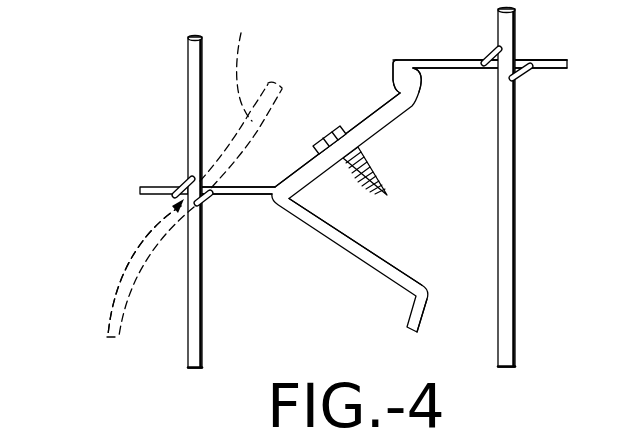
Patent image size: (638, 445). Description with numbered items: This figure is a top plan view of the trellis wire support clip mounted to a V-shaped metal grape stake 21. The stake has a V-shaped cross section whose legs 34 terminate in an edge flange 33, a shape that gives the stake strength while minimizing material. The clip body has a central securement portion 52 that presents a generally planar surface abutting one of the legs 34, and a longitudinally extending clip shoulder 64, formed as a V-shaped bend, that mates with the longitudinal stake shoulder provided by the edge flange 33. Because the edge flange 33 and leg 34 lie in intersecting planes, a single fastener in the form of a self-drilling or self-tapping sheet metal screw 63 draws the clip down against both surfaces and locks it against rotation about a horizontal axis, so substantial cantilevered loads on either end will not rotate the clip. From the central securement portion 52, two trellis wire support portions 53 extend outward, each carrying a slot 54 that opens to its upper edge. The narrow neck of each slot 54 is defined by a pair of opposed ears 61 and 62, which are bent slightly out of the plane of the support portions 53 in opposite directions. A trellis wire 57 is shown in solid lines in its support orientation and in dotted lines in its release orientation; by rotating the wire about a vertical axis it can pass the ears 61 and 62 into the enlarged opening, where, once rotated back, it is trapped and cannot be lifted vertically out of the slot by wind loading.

The grape stake 21 is at (355, 258).
The edge flange 33 is at (421, 68).
The leg 34 is at (412, 107).
The central securement portion 52 is at (312, 148).
The trellis wire support portion 53 is at (247, 195).
The slot 54 is at (140, 236).
The trellis wire 57 is at (205, 62).
The ear 61 is at (210, 201).
The ear 62 is at (188, 180).
The screw 63 is at (344, 126).
The clip shoulder 64 is at (409, 67).